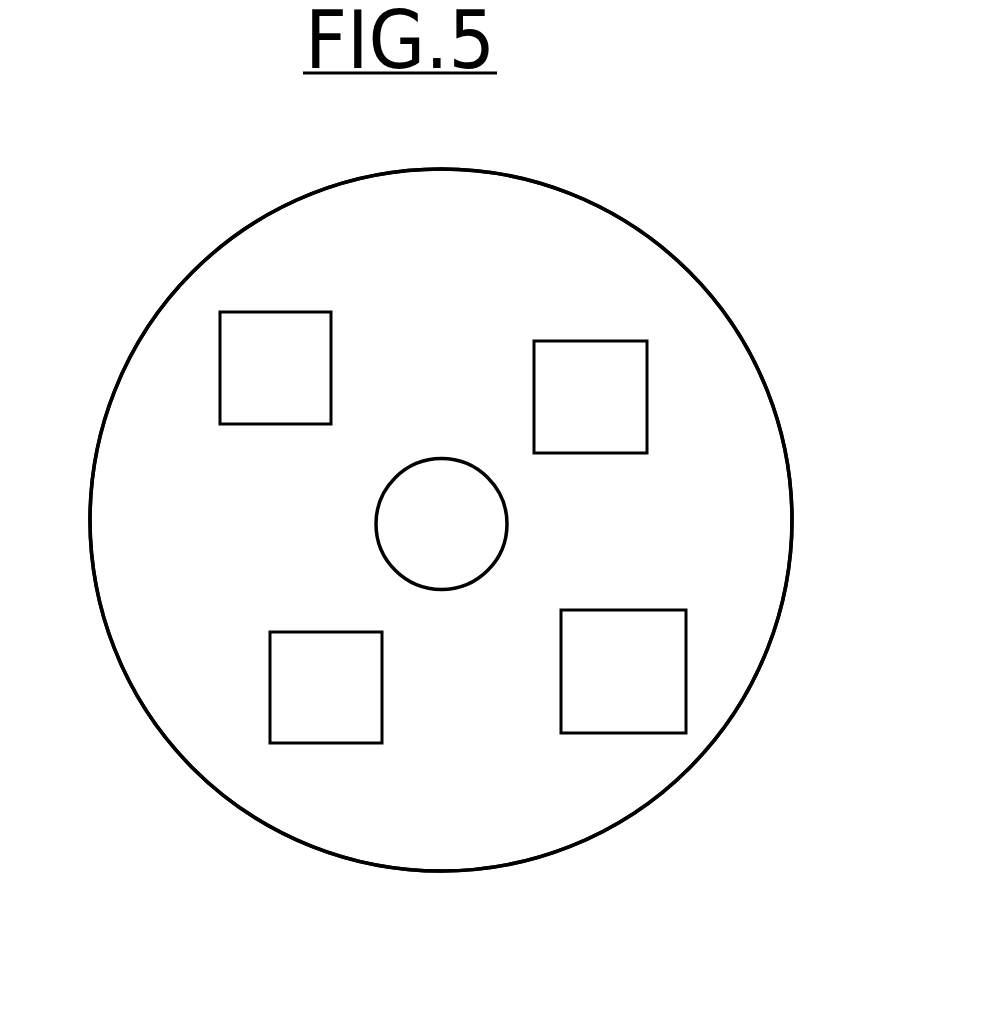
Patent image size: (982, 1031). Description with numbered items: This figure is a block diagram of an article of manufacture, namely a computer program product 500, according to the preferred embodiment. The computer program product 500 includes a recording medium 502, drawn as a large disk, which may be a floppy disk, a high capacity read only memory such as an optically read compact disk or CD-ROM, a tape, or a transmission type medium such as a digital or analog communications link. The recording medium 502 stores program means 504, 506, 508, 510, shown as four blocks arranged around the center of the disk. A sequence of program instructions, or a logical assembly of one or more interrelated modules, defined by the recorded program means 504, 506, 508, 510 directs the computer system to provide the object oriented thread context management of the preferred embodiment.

The computer program product 500 is at (748, 281).
The recording medium 502 is at (140, 306).
The program means 504 is at (590, 397).
The program means 506 is at (623, 671).
The program means 508 is at (326, 687).
The program means 510 is at (275, 368).